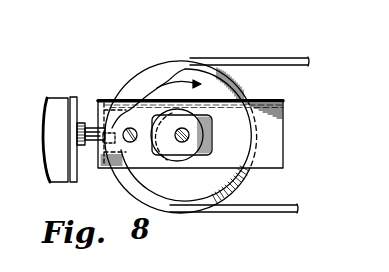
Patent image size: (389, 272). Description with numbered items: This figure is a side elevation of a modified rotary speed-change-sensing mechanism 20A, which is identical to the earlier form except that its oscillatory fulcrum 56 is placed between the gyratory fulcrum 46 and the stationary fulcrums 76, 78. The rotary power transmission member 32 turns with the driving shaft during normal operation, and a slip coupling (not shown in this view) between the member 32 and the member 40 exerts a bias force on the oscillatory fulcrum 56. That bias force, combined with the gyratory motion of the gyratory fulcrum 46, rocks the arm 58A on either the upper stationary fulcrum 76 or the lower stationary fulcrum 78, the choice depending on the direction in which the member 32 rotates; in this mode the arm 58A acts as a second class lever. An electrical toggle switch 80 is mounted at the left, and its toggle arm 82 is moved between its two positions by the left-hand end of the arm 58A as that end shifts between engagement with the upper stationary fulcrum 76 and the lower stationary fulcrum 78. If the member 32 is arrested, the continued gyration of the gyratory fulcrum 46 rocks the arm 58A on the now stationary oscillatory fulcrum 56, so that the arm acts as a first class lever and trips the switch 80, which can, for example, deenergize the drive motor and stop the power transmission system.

The modified rotary speed-change mechanism 20A is at (189, 35).
The rotary power transmission member 32 is at (192, 62).
The member 40 is at (146, 86).
The gyratory fulcrum 46 is at (156, 176).
The oscillatory fulcrum 56 is at (155, 144).
The arm 58A is at (263, 168).
The upper stationary fulcrum 76 is at (82, 122).
The lower stationary fulcrum 78 is at (83, 147).
The electrical toggle switch 80 is at (47, 120).
The toggle arm 82 is at (102, 131).